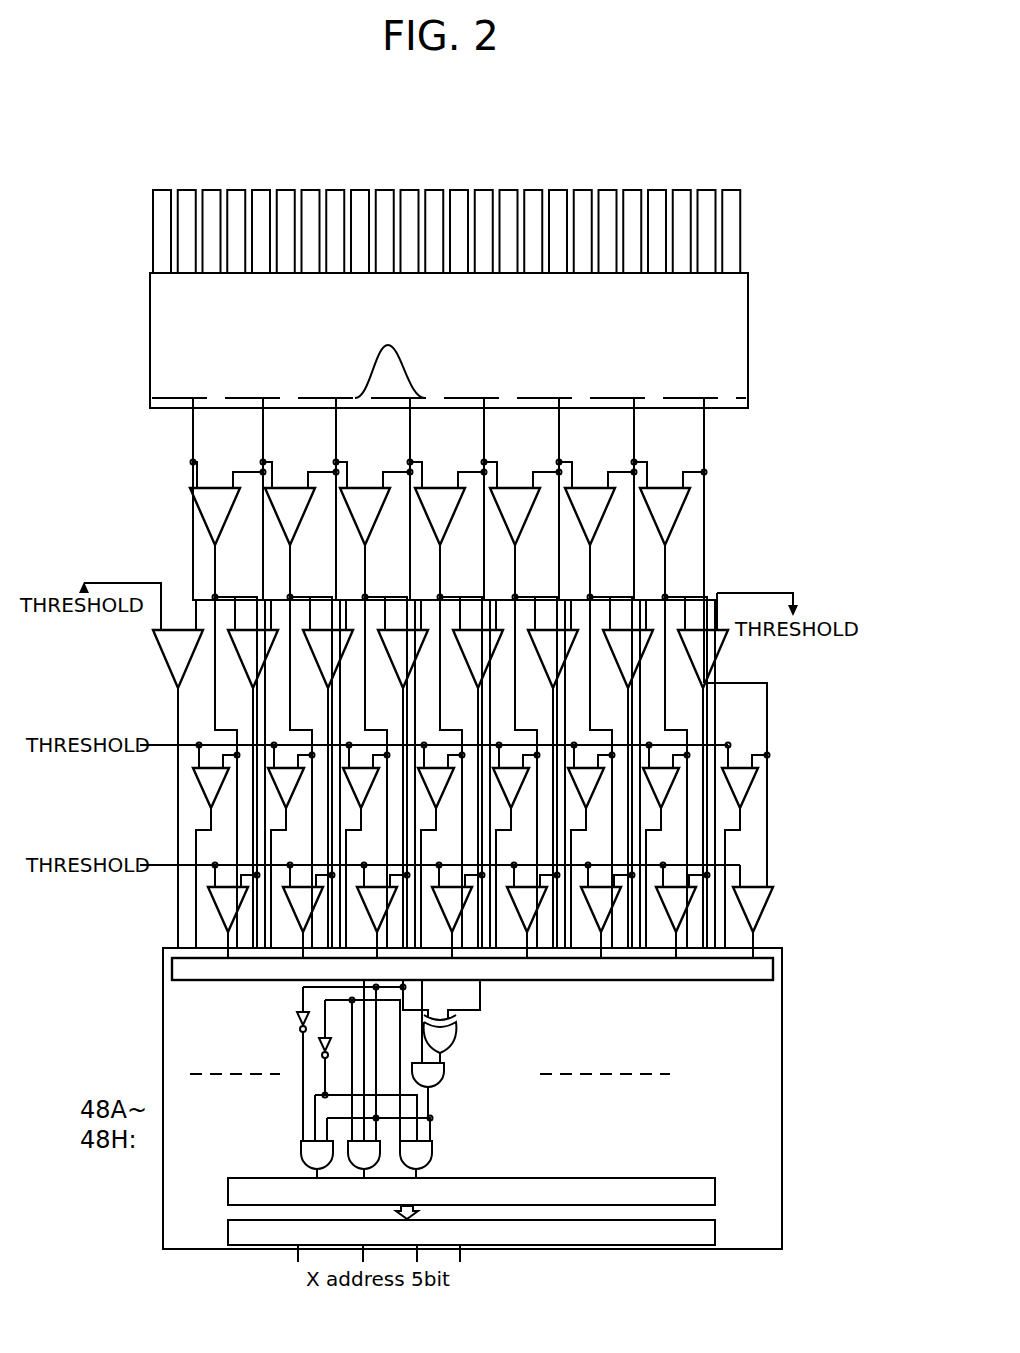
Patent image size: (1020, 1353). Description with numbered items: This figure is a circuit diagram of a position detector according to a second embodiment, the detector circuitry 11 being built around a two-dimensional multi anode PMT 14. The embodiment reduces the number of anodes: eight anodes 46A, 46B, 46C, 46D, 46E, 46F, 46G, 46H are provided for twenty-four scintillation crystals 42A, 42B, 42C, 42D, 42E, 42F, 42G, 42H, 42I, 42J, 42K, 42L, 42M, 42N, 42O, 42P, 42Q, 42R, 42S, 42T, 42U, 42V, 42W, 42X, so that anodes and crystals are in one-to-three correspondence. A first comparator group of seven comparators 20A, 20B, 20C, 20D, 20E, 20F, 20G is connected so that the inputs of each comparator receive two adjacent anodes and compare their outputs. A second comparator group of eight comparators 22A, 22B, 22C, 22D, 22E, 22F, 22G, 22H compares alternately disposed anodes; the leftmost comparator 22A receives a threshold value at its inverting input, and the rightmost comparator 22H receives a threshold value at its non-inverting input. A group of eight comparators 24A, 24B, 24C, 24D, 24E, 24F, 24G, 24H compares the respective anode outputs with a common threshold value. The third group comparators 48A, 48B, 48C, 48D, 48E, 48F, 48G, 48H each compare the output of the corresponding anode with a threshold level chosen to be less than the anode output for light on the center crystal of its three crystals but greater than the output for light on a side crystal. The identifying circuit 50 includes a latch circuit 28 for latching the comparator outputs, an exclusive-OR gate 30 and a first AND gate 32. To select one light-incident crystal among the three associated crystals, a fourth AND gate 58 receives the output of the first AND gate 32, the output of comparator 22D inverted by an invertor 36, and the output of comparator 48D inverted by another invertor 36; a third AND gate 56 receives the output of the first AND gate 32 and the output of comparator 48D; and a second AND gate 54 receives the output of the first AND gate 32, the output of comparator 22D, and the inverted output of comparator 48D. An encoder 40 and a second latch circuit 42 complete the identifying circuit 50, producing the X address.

The position detecting circuit 11 is at (125, 470).
The 2D-multi anode PMT 14 is at (138, 343).
The scintillation crystal 42A is at (153, 232).
The scintillation crystal 42B is at (187, 190).
The scintillation crystal 42C is at (211, 190).
The scintillation crystal 42D is at (236, 190).
The scintillation crystal 42E is at (261, 190).
The scintillation crystal 42F is at (286, 190).
The scintillation crystal 42G is at (310, 190).
The scintillation crystal 42H is at (335, 190).
The scintillation crystal 42I is at (360, 190).
The scintillation crystal 42J is at (385, 190).
The scintillation crystal 42K is at (409, 190).
The scintillation crystal 42L is at (434, 190).
The scintillation crystal 42M is at (459, 190).
The scintillation crystal 42N is at (484, 190).
The scintillation crystal 42O is at (508, 190).
The scintillation crystal 42P is at (533, 190).
The scintillation crystal 42Q is at (558, 190).
The scintillation crystal 42R is at (582, 190).
The scintillation crystal 42S is at (607, 190).
The scintillation crystal 42T is at (632, 190).
The scintillation crystal 42U is at (657, 190).
The scintillation crystal 42V is at (681, 190).
The scintillation crystal 42W is at (706, 190).
The scintillation crystal 42X is at (738, 232).
The anode 46A is at (191, 398).
The anode 46B is at (262, 398).
The anode 46C is at (336, 398).
The anode 46D is at (411, 398).
The anode 46E is at (484, 398).
The anode 46F is at (560, 398).
The anode 46G is at (635, 398).
The anode 46H is at (704, 398).
The first group comparator 20A is at (193, 515).
The first group comparator 20B is at (282, 486).
The first group comparator 20C is at (355, 486).
The first group comparator 20D is at (432, 486).
The first group comparator 20E is at (505, 486).
The first group comparator 20F is at (580, 486).
The first group comparator 20G is at (658, 486).
The second group comparator 22A is at (190, 670).
The second group comparator 22B is at (265, 670).
The second group comparator 22C is at (340, 670).
The second group comparator 22D is at (415, 670).
The second group comparator 22E is at (490, 670).
The second group comparator 22F is at (565, 670).
The second group comparator 22G is at (640, 670).
The second group comparator 22H is at (715, 670).
The fourth group comparator 24A is at (216, 795).
The fourth group comparator 24B is at (291, 795).
The fourth group comparator 24C is at (366, 795).
The fourth group comparator 24D is at (441, 795).
The fourth group comparator 24E is at (516, 795).
The fourth group comparator 24F is at (591, 795).
The fourth group comparator 24G is at (666, 795).
The fourth group comparator 24H is at (745, 795).
The third group comparator 48A is at (208, 912).
The third group comparator 48B is at (300, 925).
The third group comparator 48C is at (374, 925).
The third group comparator 48D is at (456, 925).
The third group comparator 48E is at (530, 925).
The third group comparator 48F is at (605, 925).
The third group comparator 48G is at (680, 925).
The third group comparator 48H is at (755, 925).
The identifying circuit 50 is at (163, 1022).
The latch circuit 28 is at (712, 982).
The invertor 36 is at (298, 1020).
The exclusive-OR gate 30 is at (455, 1036).
The first AND gate 32 is at (446, 1074).
The fourth AND gate 58 is at (303, 1152).
The third AND gate 56 is at (378, 1165).
The second AND gate 54 is at (432, 1152).
The encoder 40 is at (228, 1193).
The second latch circuit 42 is at (228, 1234).